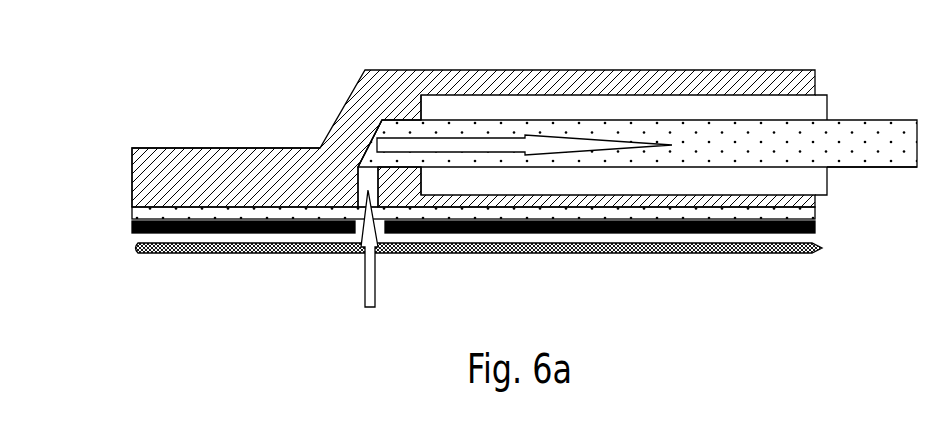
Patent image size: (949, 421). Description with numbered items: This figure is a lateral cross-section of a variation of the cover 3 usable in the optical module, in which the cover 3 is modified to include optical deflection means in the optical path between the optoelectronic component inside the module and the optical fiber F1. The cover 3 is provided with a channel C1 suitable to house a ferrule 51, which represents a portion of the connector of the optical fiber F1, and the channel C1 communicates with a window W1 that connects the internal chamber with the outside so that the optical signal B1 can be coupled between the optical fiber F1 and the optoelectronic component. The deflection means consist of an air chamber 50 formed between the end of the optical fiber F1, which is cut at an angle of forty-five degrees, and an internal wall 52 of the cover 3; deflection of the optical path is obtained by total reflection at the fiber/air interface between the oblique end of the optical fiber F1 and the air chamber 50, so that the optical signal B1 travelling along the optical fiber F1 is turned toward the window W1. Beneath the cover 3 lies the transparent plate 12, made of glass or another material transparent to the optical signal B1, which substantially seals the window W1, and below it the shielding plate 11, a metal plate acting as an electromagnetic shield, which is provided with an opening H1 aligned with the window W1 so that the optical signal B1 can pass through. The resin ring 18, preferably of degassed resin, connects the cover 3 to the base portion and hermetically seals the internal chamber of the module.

The cover 3 is at (472, 173).
The shielding plate 11 is at (132, 227).
The transparent plate 12 is at (132, 212).
The resin ring 18 is at (735, 252).
The air chamber 50 is at (363, 148).
The ferrule 51 is at (702, 108).
The internal wall 52 is at (365, 140).
The optical signal B1 is at (455, 143).
The channel C1 is at (843, 176).
The optical fiber F1 is at (855, 127).
The opening H1 is at (360, 227).
The window W1 is at (365, 198).